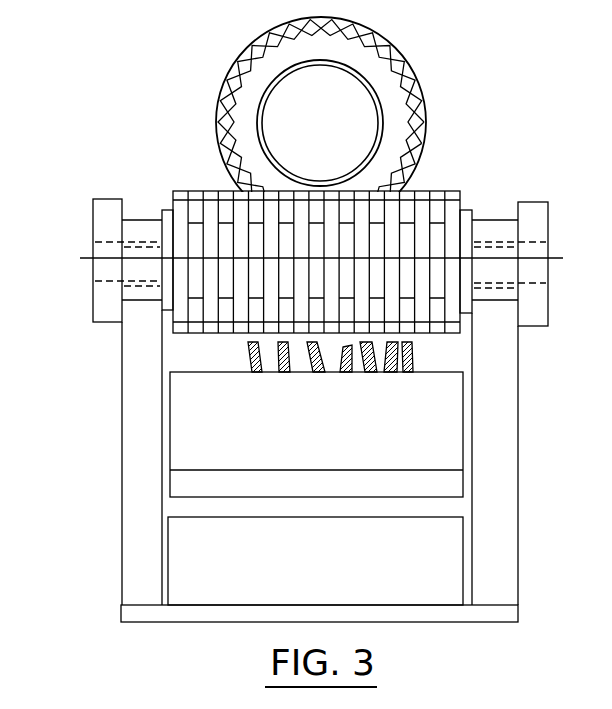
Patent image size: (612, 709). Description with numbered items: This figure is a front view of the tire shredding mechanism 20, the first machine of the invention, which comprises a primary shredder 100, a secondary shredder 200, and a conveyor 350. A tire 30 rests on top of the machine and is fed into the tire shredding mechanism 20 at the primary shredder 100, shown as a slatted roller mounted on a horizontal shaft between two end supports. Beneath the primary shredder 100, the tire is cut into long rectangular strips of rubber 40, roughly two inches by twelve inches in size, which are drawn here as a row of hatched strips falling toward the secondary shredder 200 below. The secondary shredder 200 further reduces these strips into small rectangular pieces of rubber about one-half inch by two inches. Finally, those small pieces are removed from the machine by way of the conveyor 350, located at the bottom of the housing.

The tire shredding mechanism 20 is at (67, 258).
The tire 30 is at (430, 73).
The primary shredder 100 is at (227, 192).
The long rectangular strips of rubber 40 is at (412, 358).
The secondary shredder 200 is at (210, 446).
The conveyor 350 is at (205, 552).